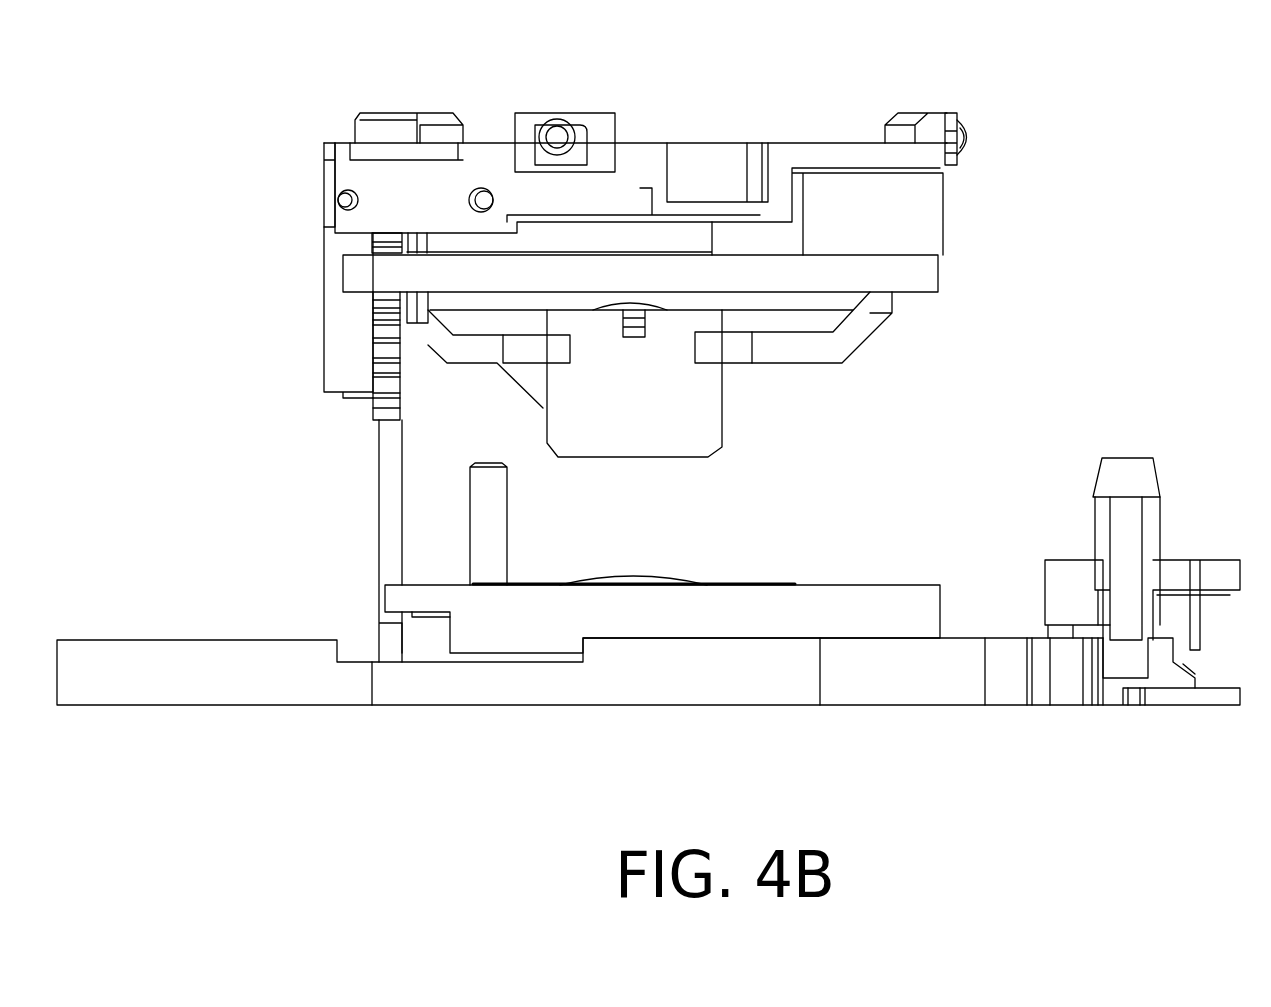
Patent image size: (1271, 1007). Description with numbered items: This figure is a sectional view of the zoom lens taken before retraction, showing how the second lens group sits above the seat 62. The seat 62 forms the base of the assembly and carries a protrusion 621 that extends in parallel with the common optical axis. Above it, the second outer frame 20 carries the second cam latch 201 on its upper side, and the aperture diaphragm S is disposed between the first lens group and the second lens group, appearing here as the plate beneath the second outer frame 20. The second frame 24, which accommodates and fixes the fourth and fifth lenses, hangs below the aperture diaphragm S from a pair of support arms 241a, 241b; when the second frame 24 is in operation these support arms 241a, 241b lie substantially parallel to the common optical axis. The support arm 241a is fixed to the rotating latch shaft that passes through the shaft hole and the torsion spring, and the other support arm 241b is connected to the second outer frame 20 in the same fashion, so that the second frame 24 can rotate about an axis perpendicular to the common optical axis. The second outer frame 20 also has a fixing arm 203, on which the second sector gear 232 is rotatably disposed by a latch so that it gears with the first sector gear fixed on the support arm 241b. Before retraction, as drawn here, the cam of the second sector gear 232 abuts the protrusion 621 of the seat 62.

The second outer frame 20 is at (812, 152).
The second cam latch 201 is at (557, 130).
The aperture diaphragm S is at (918, 273).
The fixing arm 203 is at (345, 353).
The second sector gear 232 is at (387, 392).
The support arm 241b is at (437, 338).
The support arm 241a is at (832, 347).
The second frame 24 is at (695, 427).
The protrusion 621 is at (390, 527).
The seat 62 is at (253, 685).